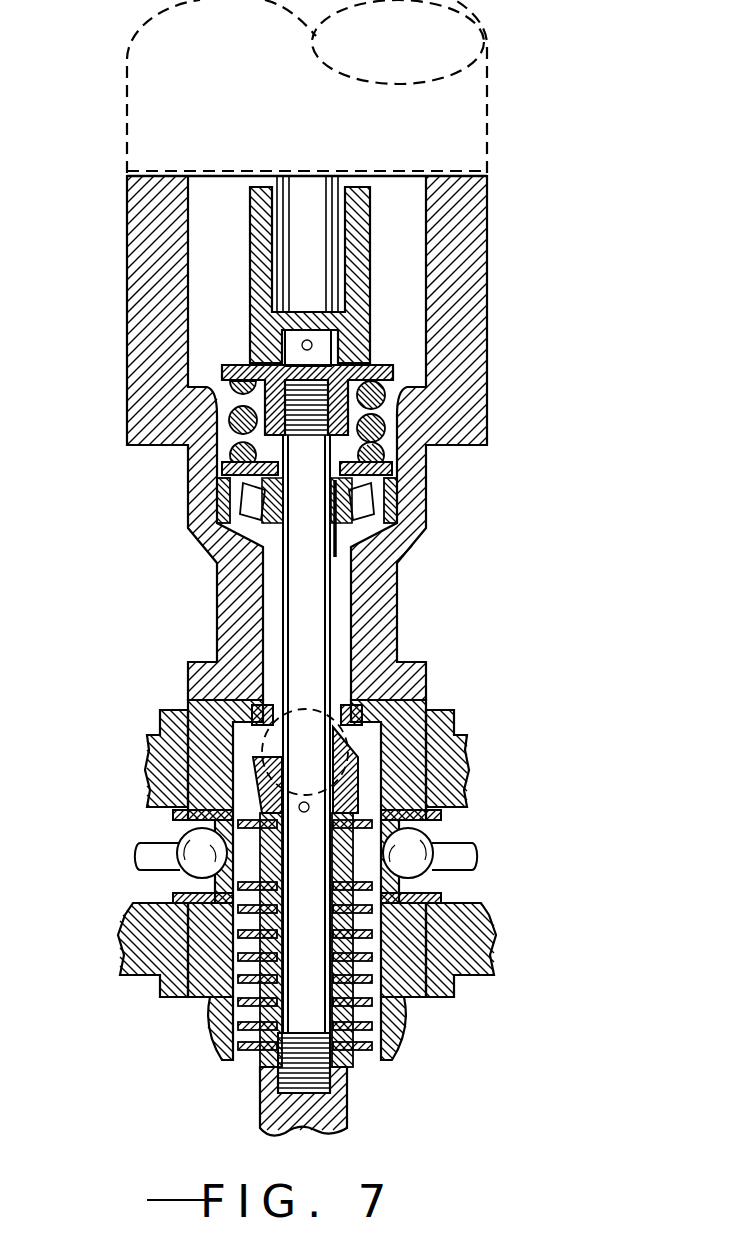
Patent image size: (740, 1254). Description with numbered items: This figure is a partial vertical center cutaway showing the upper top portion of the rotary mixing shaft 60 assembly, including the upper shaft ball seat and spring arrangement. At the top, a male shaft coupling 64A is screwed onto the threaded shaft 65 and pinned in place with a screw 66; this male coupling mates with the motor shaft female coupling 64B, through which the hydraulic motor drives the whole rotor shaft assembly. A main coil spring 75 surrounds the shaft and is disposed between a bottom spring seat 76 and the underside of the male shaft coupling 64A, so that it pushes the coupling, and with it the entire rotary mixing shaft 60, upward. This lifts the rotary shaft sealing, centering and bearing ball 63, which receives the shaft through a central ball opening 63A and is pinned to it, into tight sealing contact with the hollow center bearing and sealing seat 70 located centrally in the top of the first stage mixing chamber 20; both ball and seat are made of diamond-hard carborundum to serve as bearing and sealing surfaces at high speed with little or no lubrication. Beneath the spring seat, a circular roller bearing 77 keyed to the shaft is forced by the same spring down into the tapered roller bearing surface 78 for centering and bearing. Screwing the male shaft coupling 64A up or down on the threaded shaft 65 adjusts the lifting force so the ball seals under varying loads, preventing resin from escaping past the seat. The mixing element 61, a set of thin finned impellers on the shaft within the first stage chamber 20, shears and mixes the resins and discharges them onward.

The 1st stage mixing chamber 20 is at (403, 727).
The rotary mixing shaft 60 is at (300, 973).
The mixing element 61 is at (360, 1057).
The bearing ball 63 is at (227, 727).
The central ball opening 63A is at (300, 750).
The male shaft coupling 64A is at (384, 364).
The motor shaft female coupling 64B is at (370, 246).
The threaded shaft 65 is at (285, 400).
The screw 66 is at (303, 345).
The sealing seat 70 is at (263, 677).
The main coil spring 75 is at (400, 417).
The bottom spring seat 76 is at (417, 462).
The circular roller bearing 77 is at (253, 500).
The tapered roller bearing surface 78 is at (240, 517).